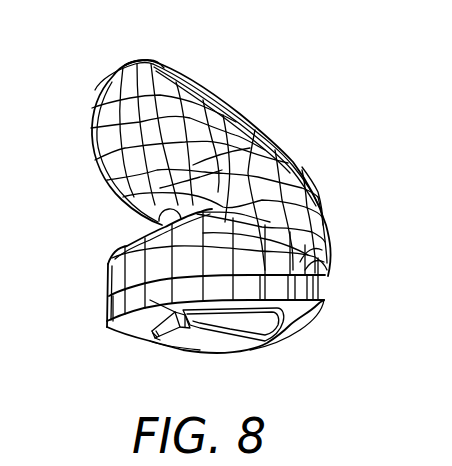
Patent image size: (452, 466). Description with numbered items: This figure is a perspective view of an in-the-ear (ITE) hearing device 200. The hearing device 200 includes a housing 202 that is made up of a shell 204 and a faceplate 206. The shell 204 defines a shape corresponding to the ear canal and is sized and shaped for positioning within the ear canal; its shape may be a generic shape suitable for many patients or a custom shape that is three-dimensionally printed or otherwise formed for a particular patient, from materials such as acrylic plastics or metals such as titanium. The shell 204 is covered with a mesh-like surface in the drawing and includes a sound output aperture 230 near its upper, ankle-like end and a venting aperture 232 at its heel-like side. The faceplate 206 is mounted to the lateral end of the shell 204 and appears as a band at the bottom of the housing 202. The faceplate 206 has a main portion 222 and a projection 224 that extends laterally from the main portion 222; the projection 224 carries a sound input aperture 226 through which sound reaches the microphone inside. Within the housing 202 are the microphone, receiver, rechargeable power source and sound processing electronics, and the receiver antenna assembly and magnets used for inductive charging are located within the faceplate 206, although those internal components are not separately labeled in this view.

The ITE hearing device 200 is at (256, 52).
The housing 202 is at (122, 245).
The shell 204 is at (245, 120).
The faceplate 206 is at (106, 304).
The main portion 222 is at (324, 290).
The projection 224 is at (183, 344).
The sound input aperture 226 is at (198, 328).
The sound output aperture 230 is at (123, 63).
The venting aperture 232 is at (320, 265).